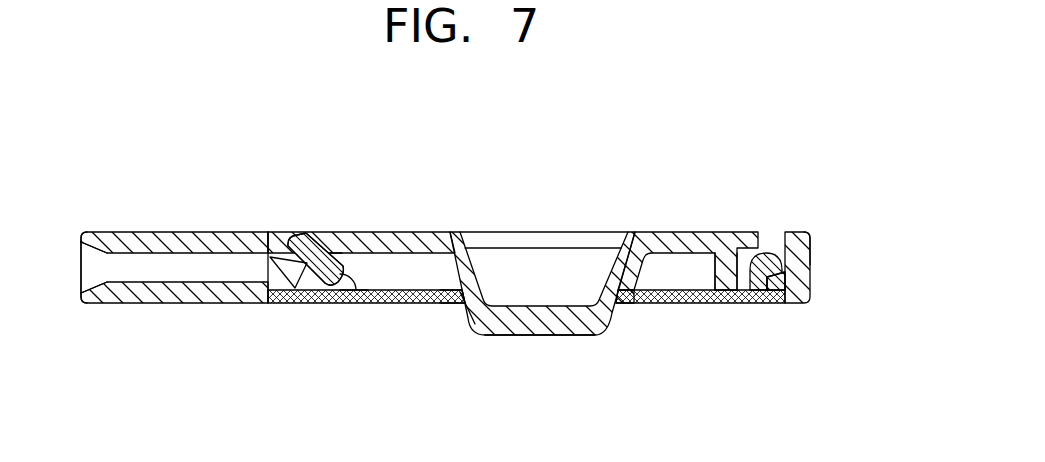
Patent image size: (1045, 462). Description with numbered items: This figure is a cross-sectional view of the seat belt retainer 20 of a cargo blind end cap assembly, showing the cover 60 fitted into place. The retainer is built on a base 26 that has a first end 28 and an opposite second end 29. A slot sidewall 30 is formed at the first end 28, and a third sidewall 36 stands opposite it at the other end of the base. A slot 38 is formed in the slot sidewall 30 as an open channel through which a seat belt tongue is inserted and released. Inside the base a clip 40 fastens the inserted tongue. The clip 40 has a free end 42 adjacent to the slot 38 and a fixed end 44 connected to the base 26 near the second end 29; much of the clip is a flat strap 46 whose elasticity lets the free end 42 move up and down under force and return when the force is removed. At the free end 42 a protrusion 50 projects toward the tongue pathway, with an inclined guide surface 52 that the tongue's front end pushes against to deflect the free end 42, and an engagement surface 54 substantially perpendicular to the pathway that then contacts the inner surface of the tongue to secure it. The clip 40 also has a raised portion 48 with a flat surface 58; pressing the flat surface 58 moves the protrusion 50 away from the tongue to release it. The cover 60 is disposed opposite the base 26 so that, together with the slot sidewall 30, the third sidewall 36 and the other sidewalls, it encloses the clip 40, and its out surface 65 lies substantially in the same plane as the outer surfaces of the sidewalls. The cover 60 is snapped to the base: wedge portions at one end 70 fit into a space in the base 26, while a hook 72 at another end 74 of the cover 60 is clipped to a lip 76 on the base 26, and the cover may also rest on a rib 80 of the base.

The seat belt retainer 20 is at (630, 192).
The base 26 is at (546, 228).
The first end 28 is at (81, 238).
The second end 29 is at (810, 246).
The slot sidewall 30 is at (202, 303).
The third sidewall 36 is at (806, 297).
The slot 38 is at (151, 271).
The clip 40 is at (520, 338).
The free end 42 is at (290, 232).
The fixed end 44 is at (721, 232).
The flat strap 46 is at (390, 232).
The raised portion 48 is at (633, 301).
The protrusion 50 is at (314, 290).
The guide surface 52 is at (294, 289).
The engagement surface 54 is at (352, 303).
The flat surface 58 is at (562, 336).
The cover 60 is at (397, 306).
The out surface 65 is at (424, 304).
The one end 70 is at (268, 300).
The hook 72 is at (738, 302).
The another end 74 is at (790, 302).
The lip 76 is at (768, 276).
The rib 80 is at (725, 302).